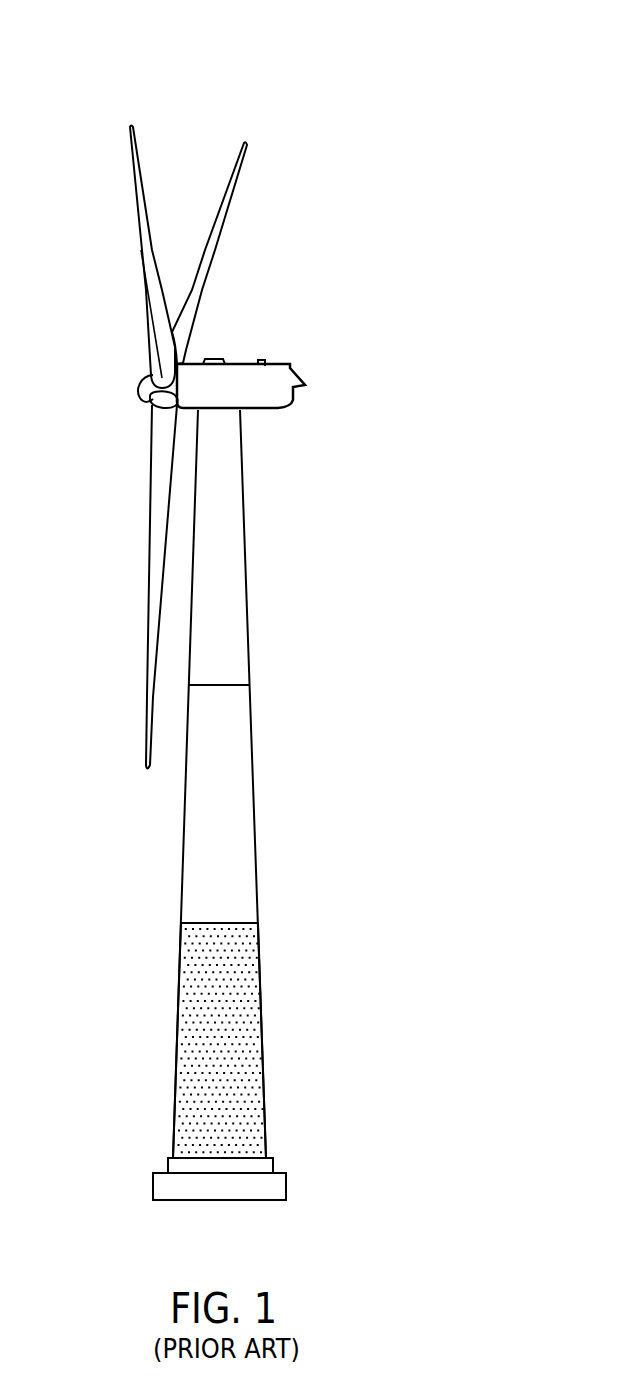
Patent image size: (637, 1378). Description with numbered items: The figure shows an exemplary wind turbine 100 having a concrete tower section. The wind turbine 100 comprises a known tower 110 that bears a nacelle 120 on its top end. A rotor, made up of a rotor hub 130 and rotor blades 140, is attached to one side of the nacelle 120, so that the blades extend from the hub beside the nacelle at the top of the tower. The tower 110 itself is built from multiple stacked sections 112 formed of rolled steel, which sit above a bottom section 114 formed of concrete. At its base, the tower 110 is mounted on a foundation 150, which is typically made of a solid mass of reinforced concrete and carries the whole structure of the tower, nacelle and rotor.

The wind turbine 100 is at (378, 92).
The tower 110 is at (247, 628).
The stacked sections 112 is at (223, 523).
The bottom section 114 is at (252, 1012).
The nacelle 120 is at (298, 373).
The rotor hub 130 is at (142, 387).
The rotor blades 140 is at (147, 262).
The foundation 150 is at (278, 1172).